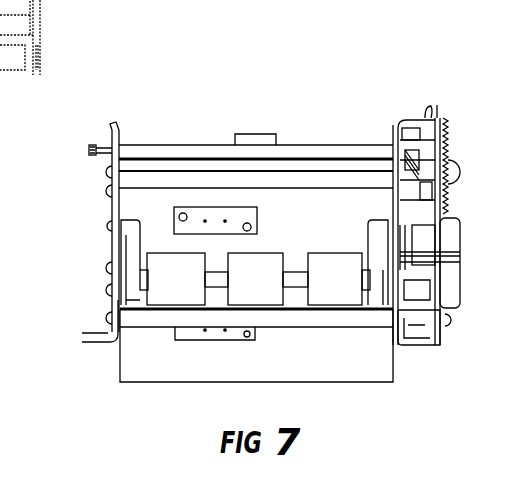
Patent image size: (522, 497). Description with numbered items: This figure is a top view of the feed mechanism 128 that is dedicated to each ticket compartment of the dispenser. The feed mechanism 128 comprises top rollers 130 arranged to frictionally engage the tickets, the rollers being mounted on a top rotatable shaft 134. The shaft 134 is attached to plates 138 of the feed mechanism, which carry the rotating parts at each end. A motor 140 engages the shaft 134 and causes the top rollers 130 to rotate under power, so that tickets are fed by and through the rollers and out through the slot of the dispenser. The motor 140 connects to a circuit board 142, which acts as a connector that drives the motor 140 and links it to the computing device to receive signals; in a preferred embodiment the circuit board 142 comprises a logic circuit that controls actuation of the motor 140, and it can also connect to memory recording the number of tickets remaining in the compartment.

The feed mechanism 128 is at (224, 106).
The top rollers 130 is at (178, 283).
The top rotatable shaft 134 is at (299, 272).
The plates 138 is at (100, 345).
The motor 140 is at (425, 285).
The circuit board 142 is at (436, 116).